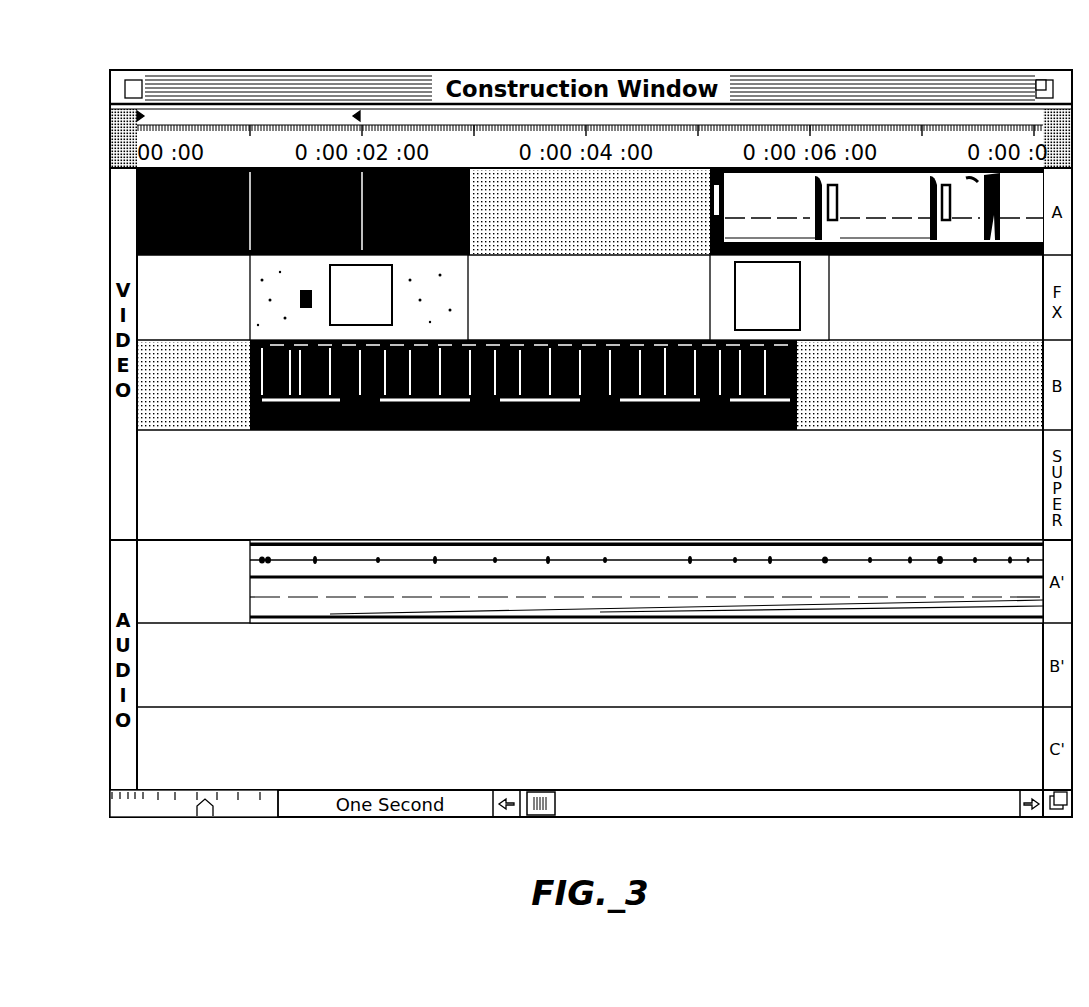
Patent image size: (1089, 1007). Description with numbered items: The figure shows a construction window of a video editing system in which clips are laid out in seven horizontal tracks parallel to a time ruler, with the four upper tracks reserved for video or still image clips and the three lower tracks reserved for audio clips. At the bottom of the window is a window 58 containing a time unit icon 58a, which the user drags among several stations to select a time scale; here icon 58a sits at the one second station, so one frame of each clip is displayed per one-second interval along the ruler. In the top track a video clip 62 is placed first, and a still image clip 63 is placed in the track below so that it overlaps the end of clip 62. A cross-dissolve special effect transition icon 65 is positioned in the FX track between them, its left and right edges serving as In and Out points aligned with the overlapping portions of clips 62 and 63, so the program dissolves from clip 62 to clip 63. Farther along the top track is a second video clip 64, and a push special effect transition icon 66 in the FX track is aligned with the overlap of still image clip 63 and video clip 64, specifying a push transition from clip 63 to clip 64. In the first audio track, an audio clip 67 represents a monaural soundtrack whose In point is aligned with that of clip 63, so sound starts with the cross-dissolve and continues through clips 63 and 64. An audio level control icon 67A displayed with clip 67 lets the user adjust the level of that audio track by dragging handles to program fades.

The window 58 is at (143, 818).
The time unit icon 58a is at (204, 818).
The video clip 62 is at (136, 224).
The still image clip 63 is at (450, 431).
The video clip 64 is at (761, 193).
The special effect transition icon 65 is at (462, 321).
The push special effect transition icon 66 is at (822, 312).
The audio clip 67 is at (632, 548).
The audio level control icon 67A is at (248, 590).